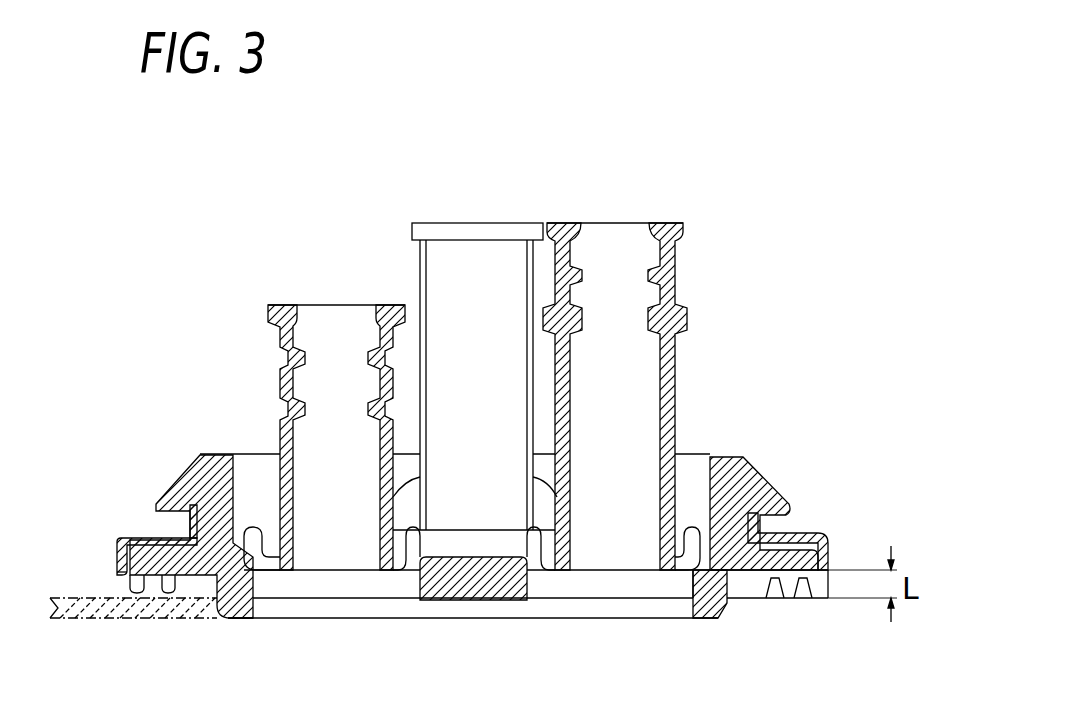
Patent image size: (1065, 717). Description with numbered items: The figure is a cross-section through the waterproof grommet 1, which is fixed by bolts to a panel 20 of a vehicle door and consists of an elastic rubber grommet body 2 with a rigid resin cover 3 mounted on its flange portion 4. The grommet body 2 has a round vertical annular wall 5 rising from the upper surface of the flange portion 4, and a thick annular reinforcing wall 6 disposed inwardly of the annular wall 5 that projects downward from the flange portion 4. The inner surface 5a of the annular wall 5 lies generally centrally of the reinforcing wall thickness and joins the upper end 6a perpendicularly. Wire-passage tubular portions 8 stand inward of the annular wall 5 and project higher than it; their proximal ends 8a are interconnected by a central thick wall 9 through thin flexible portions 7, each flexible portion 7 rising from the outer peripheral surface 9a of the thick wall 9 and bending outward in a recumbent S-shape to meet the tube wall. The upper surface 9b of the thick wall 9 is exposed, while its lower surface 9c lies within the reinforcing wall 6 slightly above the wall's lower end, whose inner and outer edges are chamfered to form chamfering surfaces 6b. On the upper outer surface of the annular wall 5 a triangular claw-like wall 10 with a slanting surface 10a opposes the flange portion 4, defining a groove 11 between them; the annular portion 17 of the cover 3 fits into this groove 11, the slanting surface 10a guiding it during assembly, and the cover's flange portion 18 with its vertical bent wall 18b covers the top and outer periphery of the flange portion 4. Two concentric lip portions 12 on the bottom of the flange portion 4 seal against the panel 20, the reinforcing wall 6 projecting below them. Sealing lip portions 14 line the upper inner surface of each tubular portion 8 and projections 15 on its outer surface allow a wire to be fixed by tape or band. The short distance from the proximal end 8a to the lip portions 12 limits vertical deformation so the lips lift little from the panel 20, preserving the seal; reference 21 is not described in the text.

The waterproof grommet 1 is at (730, 206).
The grommet body 2 is at (722, 428).
The cover 3 is at (127, 533).
The flange portion 4 is at (827, 533).
The annular wall 5 is at (810, 533).
The inner surface 5a is at (712, 462).
The reinforcing wall 6 is at (717, 620).
The upper end 6a is at (700, 540).
The chamfering surfaces 6b is at (690, 600).
The flexible portions 7 is at (527, 530).
The tubular portions 8 is at (557, 373).
The proximal ends 8a is at (580, 570).
The thick wall 9 is at (453, 580).
The outer peripheral surface 9a is at (418, 577).
The upper surface 9b is at (473, 557).
The lower surface 9c is at (475, 600).
The claw-like wall 10 is at (783, 503).
The slanting surface 10a is at (745, 458).
The groove 11 is at (777, 523).
The lip portions 12 is at (800, 598).
The lip portions 14 is at (650, 276).
The projections 15 is at (680, 231).
The annular portion 17 is at (193, 527).
The flange portion 18 is at (117, 537).
The bent wall 18b is at (117, 563).
The panel 20 is at (122, 608).
The bracket foot 21 is at (217, 618).